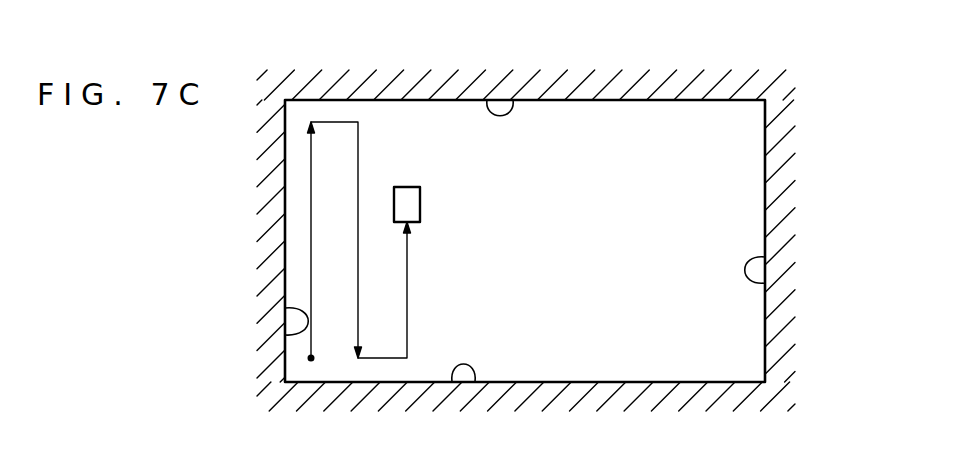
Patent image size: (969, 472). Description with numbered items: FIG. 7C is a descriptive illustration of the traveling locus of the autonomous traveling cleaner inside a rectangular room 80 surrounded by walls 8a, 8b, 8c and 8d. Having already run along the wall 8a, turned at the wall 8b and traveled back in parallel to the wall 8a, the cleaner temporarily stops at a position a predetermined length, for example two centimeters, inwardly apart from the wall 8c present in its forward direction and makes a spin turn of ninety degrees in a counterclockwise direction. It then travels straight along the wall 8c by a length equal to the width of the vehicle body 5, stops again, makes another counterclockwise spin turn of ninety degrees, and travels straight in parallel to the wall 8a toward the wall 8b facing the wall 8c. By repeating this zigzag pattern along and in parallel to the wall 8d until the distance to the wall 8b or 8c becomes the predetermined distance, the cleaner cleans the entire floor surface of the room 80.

The room 80 is at (727, 117).
The vehicle body 5 is at (420, 203).
The wall 8a is at (285, 334).
The wall 8b is at (513, 100).
The wall 8c is at (460, 383).
The wall 8d is at (765, 282).